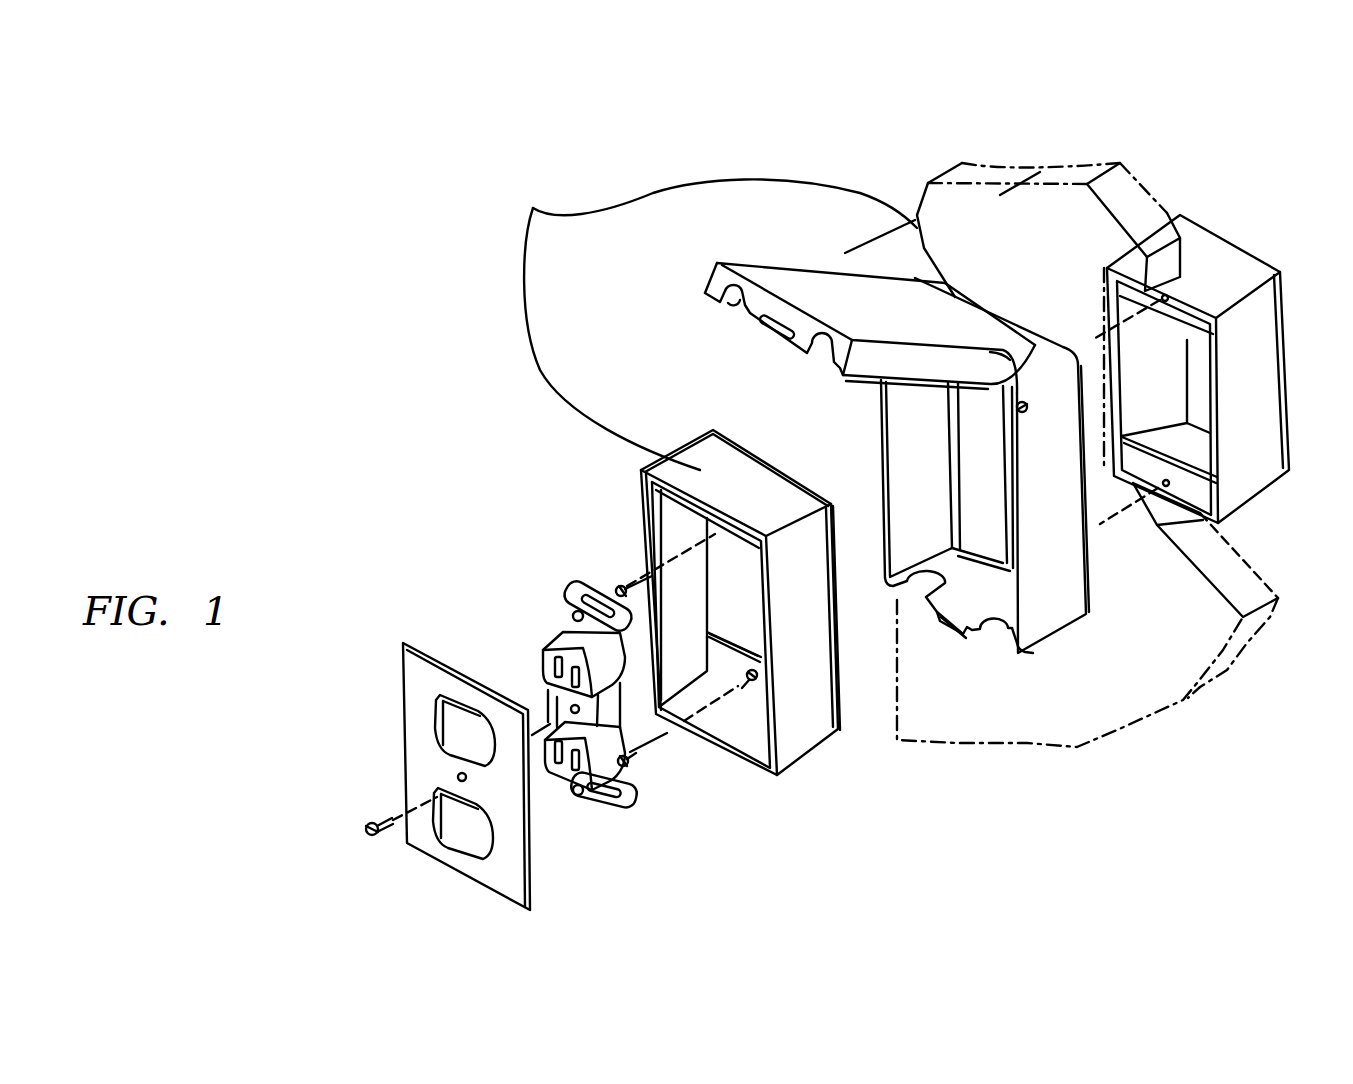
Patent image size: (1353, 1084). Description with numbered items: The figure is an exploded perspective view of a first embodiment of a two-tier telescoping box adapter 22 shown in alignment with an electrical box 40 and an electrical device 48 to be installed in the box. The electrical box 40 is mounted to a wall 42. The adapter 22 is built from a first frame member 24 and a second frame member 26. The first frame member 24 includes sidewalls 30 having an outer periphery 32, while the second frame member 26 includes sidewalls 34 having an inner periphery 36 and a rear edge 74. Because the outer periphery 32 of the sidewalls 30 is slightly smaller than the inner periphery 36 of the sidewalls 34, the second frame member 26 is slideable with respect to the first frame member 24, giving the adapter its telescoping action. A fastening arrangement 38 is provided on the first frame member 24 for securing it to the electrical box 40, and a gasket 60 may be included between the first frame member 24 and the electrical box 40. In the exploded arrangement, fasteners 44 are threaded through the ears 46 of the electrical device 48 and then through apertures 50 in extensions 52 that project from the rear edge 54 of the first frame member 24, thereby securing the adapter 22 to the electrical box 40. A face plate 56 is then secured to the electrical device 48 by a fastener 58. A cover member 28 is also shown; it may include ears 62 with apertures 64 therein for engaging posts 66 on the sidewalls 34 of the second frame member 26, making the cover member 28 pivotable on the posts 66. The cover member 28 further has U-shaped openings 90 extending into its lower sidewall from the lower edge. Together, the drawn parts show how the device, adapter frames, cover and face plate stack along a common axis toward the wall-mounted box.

The two-tier telescoping box adapter 22 is at (533, 208).
The first frame member 24 is at (743, 604).
The second frame member 26 is at (885, 458).
The cover member 28 is at (762, 246).
The sidewalls 30 is at (815, 633).
The outer periphery 32 is at (799, 732).
The sidewalls 34 is at (1063, 549).
The inner periphery 36 is at (933, 480).
The fastening arrangement 38 is at (698, 646).
The electrical box 40 is at (1270, 409).
The wall 42 is at (1058, 244).
The fasteners 44 is at (577, 616).
The ears 46 is at (637, 790).
The electrical device 48 is at (548, 556).
The apertures 50 is at (748, 684).
The extensions 52 is at (731, 640).
The rear edge 54 is at (757, 442).
The face plate 56 is at (433, 603).
The fastener 58 is at (374, 835).
The gasket 60 is at (836, 698).
The ears 62 is at (990, 352).
The apertures 64 is at (1022, 402).
The posts 66 is at (1024, 414).
The rear edge 74 is at (1100, 566).
The U-shaped openings 90 is at (733, 305).